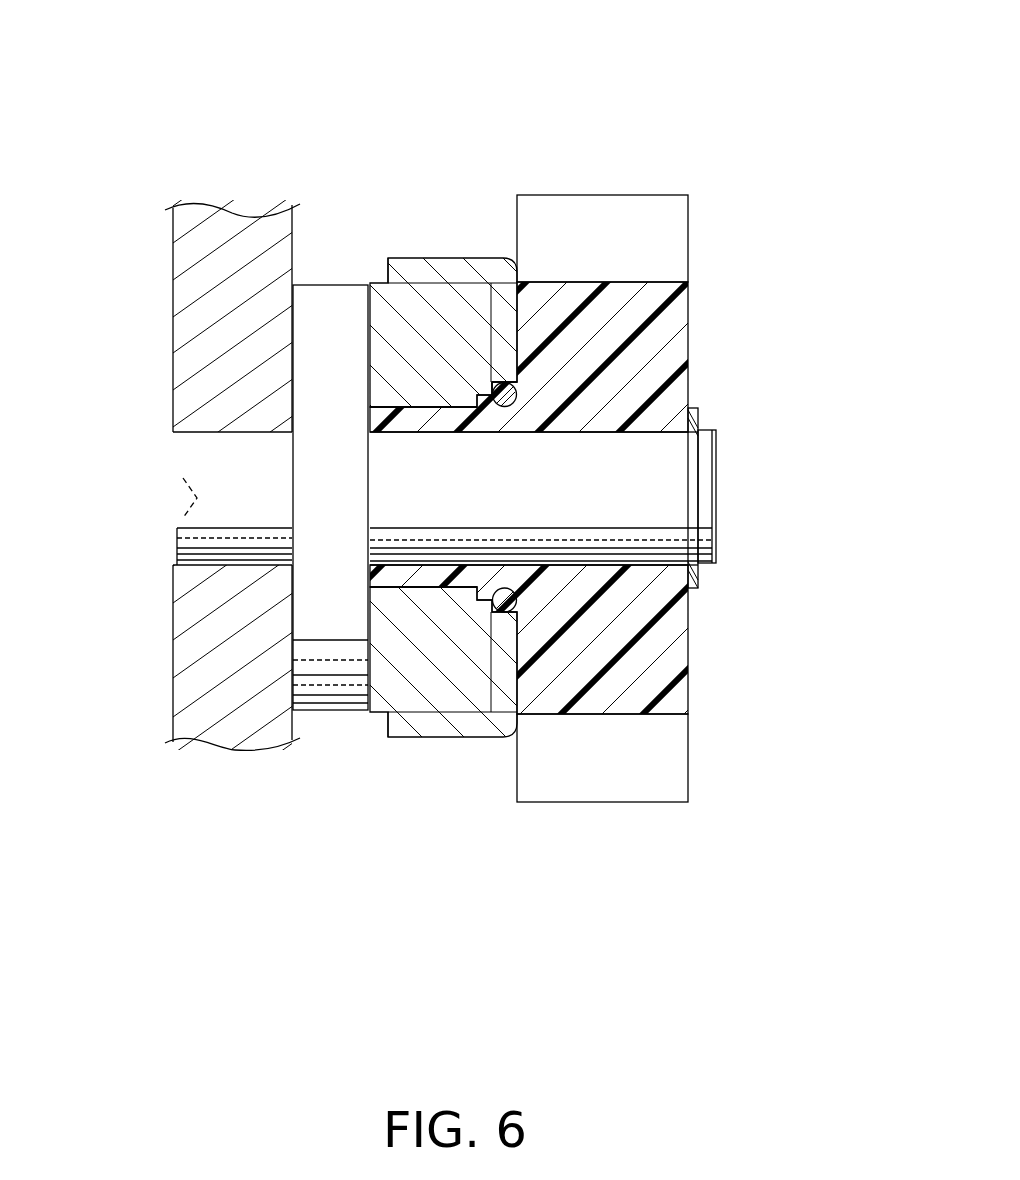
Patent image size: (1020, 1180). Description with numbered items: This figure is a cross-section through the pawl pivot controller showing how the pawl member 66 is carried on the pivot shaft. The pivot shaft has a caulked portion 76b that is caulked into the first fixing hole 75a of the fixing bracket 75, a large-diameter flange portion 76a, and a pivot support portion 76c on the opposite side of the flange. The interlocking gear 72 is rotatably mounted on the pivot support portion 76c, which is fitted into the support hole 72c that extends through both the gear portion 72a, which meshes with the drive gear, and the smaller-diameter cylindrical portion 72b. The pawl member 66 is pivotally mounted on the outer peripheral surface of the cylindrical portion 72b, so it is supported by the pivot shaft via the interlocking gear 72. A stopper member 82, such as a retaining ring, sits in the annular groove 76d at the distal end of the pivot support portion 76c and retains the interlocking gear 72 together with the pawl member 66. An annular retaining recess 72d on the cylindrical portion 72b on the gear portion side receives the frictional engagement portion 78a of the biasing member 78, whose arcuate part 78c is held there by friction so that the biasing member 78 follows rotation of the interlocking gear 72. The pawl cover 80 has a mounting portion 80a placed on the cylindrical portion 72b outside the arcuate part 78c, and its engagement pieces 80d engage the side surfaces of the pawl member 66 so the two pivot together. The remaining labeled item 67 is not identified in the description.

The pawl member 66 is at (370, 722).
The outboard direction 67 is at (588, 165).
The interlocking gear 72 is at (618, 826).
The gear portion 72a is at (660, 803).
The cylindrical portion 72b is at (426, 400).
The support hole 72c is at (620, 433).
The annular retaining recess 72d is at (518, 380).
The fixing bracket 75 is at (219, 186).
The first fixing hole 75a is at (208, 433).
The large-diameter flange portion 76a is at (333, 283).
The caulked portion 76b is at (218, 517).
The pivot support portion 76c is at (593, 407).
The annular groove 76d is at (693, 440).
The biasing member 78 is at (518, 620).
The frictional engagement portion 78a is at (499, 613).
The arcuate part 78c is at (492, 383).
The pawl cover 80 is at (412, 748).
The mounting portion 80a is at (503, 337).
The engagement pieces 80d is at (437, 260).
The stopper member 82 is at (698, 575).